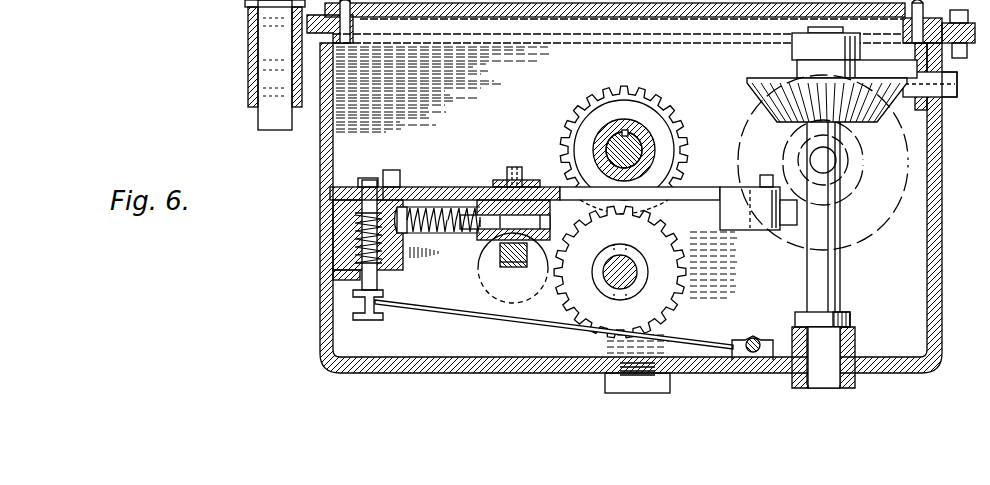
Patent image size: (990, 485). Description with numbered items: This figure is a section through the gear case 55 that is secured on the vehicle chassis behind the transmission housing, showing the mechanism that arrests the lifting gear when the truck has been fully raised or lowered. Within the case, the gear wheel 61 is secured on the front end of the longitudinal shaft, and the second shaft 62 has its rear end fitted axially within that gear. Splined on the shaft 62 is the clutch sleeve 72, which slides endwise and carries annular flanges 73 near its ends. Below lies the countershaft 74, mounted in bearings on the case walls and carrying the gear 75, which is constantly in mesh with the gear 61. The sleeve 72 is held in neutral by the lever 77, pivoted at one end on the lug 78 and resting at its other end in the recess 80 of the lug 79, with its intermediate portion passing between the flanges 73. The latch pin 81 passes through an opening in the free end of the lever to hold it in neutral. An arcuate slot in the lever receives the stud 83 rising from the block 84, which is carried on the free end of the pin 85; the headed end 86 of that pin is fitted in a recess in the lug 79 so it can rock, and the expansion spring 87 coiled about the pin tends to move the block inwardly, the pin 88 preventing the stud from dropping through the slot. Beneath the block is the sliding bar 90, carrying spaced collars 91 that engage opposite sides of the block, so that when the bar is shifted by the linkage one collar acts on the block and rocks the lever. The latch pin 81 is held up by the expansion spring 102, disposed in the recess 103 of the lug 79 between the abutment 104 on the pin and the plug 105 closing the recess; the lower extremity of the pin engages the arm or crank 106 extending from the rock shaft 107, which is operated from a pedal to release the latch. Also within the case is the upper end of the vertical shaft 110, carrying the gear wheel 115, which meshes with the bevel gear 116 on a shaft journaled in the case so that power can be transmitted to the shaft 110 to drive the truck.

The gear case 55 is at (320, 152).
The gear wheel 61 is at (650, 100).
The second shaft 62 is at (640, 140).
The sleeve 72 is at (600, 152).
The annular flanges 73 is at (595, 125).
The countershaft 74 is at (637, 275).
The gear 75 is at (590, 300).
The lever 77 is at (427, 187).
The lug 78 is at (770, 230).
The lug 79 is at (363, 250).
The recess 80 is at (330, 200).
The latch pin 81 is at (365, 178).
The stud 83 is at (507, 172).
The block 84 is at (490, 242).
The pin 85 is at (512, 268).
The head 86 is at (395, 170).
The expansion spring 87 is at (437, 235).
The pin 88 is at (525, 180).
The sliding bar 90 is at (522, 268).
The collars 91 is at (500, 285).
The expansion spring 102 is at (357, 268).
The recess 103 is at (355, 232).
The abutment 104 is at (386, 195).
The plug 105 is at (357, 290).
The arm or crank 106 is at (688, 340).
The rock shaft 107 is at (755, 338).
The vertical shaft 110 is at (258, 75).
The gear wheel 115 is at (790, 108).
The bevel gear 116 is at (875, 215).